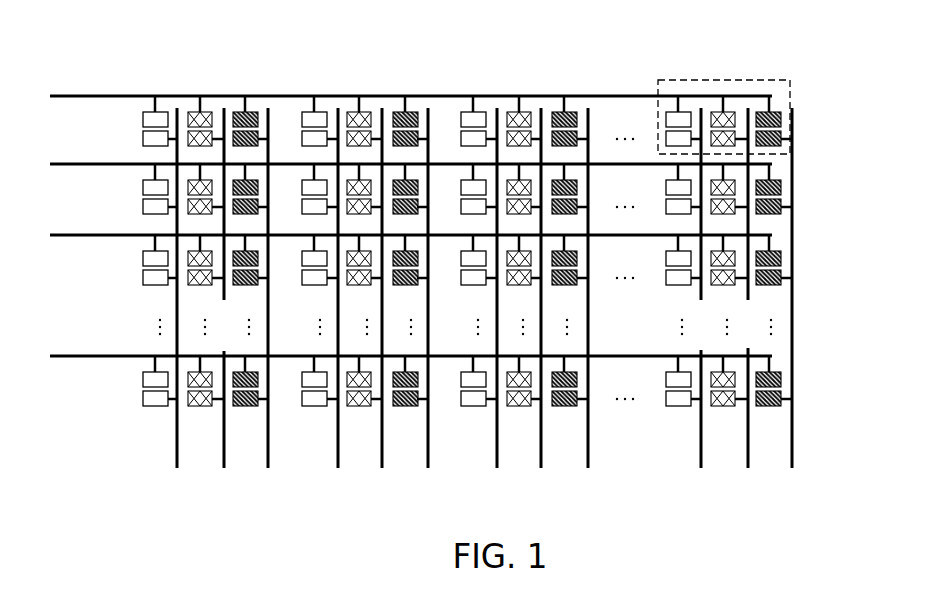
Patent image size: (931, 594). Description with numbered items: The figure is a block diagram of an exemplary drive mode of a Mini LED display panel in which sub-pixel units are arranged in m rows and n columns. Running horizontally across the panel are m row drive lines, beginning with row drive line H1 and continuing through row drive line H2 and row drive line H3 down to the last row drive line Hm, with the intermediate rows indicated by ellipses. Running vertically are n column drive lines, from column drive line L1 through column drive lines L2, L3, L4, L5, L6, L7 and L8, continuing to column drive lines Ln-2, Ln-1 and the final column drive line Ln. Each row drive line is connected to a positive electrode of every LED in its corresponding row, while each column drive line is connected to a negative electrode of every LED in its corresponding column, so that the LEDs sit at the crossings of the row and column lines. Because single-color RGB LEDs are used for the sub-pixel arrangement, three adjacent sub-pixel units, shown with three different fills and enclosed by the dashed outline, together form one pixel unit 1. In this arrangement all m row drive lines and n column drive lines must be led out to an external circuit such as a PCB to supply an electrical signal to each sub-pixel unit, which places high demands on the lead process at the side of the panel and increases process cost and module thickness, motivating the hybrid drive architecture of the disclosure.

The pixel unit 1 is at (748, 79).
The row drive line H1 is at (411, 77).
The row drive line H2 is at (411, 149).
The row drive line H3 is at (411, 218).
The row drive line Hm is at (411, 341).
The column drive line L1 is at (165, 312).
The column drive line L2 is at (222, 314).
The column drive line L3 is at (276, 314).
The column drive line L4 is at (329, 312).
The column drive line L5 is at (382, 312).
The column drive line L6 is at (428, 314).
The column drive line L7 is at (491, 312).
The column drive line L8 is at (546, 312).
The column drive line Ln-2 is at (682, 305).
The column drive line Ln-1 is at (751, 305).
The column drive line Ln is at (804, 305).